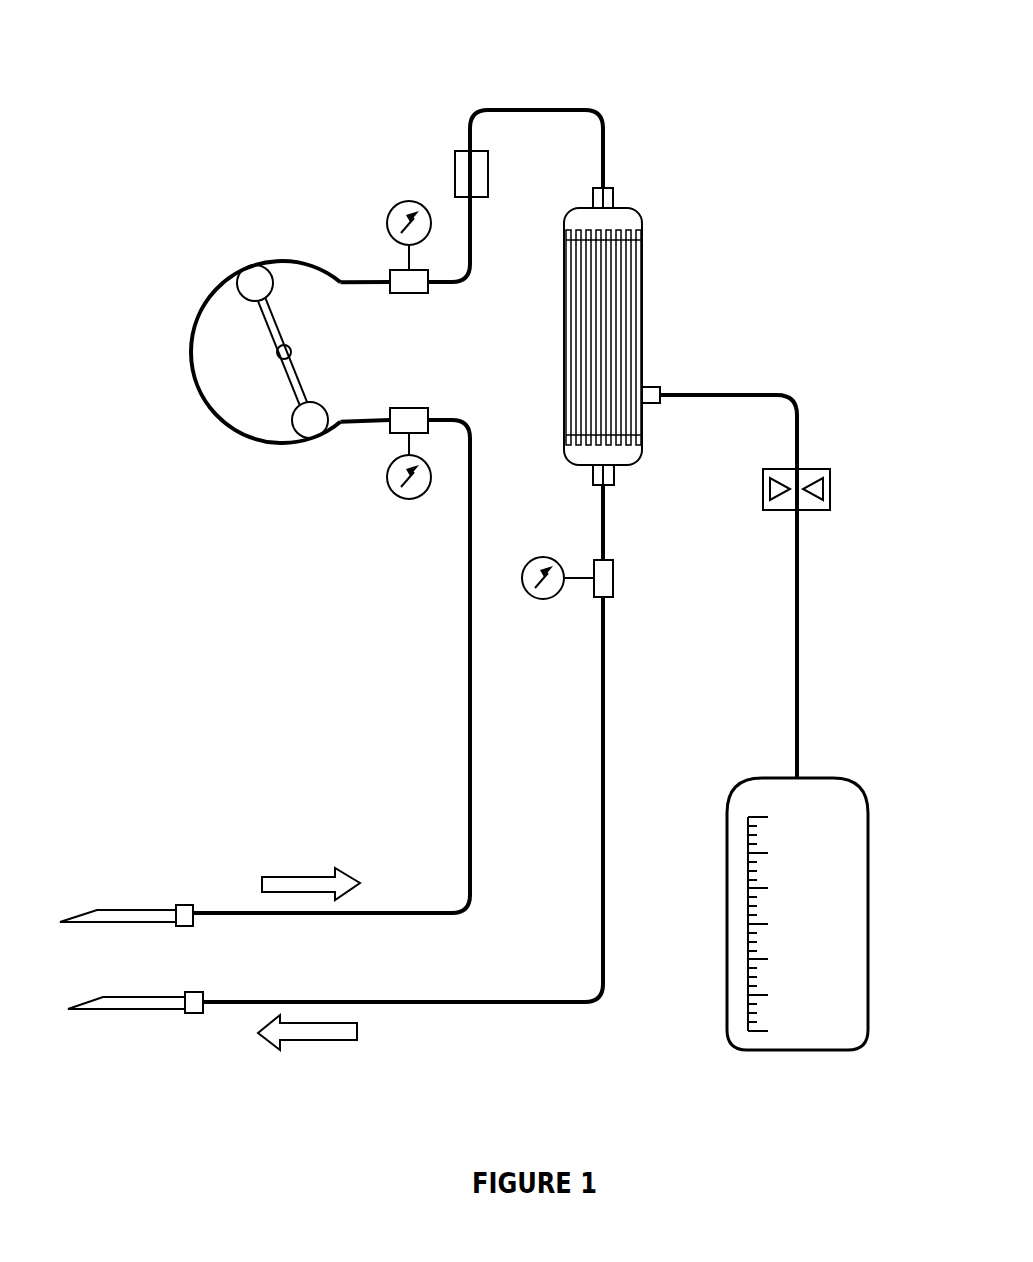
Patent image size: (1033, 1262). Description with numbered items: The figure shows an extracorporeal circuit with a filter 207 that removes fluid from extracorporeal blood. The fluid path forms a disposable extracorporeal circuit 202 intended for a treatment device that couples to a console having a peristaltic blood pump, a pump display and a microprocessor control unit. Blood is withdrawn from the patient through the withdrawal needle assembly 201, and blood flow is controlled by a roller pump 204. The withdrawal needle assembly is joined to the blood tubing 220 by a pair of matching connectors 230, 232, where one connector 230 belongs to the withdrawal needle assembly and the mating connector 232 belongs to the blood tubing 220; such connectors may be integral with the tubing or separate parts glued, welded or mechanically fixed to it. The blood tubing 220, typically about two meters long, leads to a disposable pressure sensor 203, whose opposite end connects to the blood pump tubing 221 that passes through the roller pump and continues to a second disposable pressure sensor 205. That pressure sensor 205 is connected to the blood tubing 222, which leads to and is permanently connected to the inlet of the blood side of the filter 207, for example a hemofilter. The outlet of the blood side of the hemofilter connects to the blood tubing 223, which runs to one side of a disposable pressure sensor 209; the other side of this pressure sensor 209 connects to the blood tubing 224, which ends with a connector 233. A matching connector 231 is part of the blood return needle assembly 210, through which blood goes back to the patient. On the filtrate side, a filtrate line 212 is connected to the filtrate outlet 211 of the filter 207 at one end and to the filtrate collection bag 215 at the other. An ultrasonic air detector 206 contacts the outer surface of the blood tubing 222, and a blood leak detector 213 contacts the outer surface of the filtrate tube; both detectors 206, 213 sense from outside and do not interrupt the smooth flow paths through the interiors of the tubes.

The withdrawal needle assembly 201 is at (147, 903).
The disposable extracorporeal circuit 202 is at (256, 606).
The disposable pressure sensor 203 is at (390, 485).
The roller pump 204 is at (277, 353).
The disposable pressure sensor 205 is at (390, 215).
The ultrasonic air detector 206 is at (453, 178).
The filter 207 is at (635, 330).
The disposable pressure sensor 209 is at (539, 600).
The blood return needle assembly 210 is at (145, 1017).
The filtrate outlet 211 is at (657, 380).
The filtrate line 212 is at (805, 437).
The blood leak detector 213 is at (826, 492).
The filtrate collection bag 215 is at (840, 776).
The blood tubing 220 is at (468, 712).
The blood pump tubing 221 is at (212, 413).
The blood tubing 222 is at (505, 100).
The blood tubing 223 is at (607, 527).
The blood tubing 224 is at (565, 1007).
The connector 230 is at (176, 905).
The connector 231 is at (185, 1013).
The connector 232 is at (194, 897).
The connector 233 is at (200, 1013).